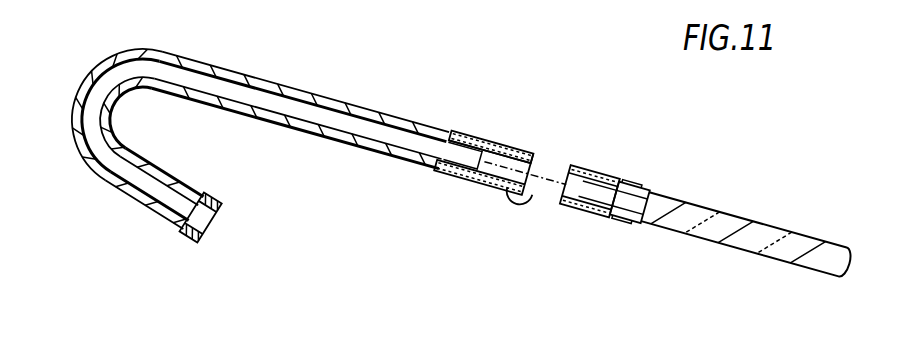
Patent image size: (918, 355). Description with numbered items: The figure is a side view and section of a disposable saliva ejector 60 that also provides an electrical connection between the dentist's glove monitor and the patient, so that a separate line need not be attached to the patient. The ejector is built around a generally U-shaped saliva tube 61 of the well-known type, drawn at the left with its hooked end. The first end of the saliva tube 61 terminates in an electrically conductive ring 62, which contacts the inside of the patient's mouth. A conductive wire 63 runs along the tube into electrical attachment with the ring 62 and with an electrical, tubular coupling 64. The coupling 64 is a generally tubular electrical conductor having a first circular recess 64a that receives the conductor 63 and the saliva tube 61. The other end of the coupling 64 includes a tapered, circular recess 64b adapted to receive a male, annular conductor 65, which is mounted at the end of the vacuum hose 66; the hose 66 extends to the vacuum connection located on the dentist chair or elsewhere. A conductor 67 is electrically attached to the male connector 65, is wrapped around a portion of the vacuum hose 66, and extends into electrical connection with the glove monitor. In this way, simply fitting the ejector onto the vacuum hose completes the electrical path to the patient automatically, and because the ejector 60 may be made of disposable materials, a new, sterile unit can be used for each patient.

The disposable saliva ejector 60 is at (260, 120).
The saliva tube 61 is at (207, 68).
The electrically conductive ring 62 is at (184, 244).
The conductive wire 63 is at (300, 131).
The electrical tubular coupling 64 is at (494, 163).
The first circular recess 64a is at (449, 127).
The tapered circular recess 64b is at (534, 198).
The male annular conductor 65 is at (582, 167).
The vacuum hose 66 is at (625, 227).
The conductor 67 is at (746, 220).